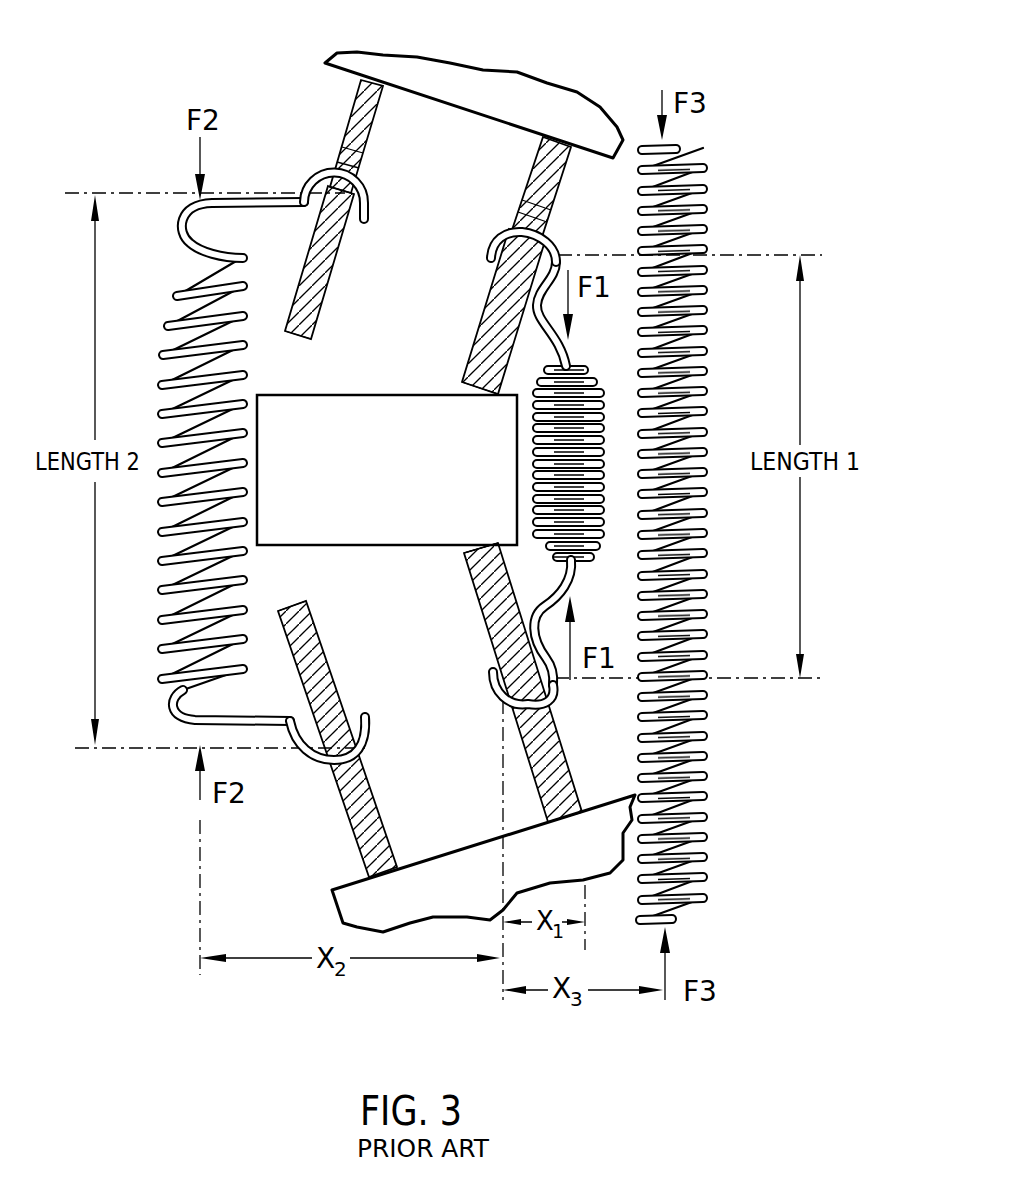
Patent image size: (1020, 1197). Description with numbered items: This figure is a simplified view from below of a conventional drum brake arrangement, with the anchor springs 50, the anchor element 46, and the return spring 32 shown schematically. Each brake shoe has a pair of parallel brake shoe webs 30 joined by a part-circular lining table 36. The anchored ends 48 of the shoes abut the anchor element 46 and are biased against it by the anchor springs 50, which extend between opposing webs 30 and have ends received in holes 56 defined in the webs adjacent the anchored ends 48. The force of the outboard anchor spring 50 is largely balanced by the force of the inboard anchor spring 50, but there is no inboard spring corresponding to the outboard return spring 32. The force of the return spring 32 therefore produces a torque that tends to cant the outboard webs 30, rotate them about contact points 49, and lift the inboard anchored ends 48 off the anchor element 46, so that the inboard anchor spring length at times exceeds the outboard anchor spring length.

The brake shoe web 30 is at (487, 297).
The return spring 32 is at (710, 220).
The lining table 36 is at (478, 107).
The anchor element 46 is at (402, 545).
The anchored end 48 is at (297, 345).
The contact point 49 is at (497, 543).
The anchor spring 50 is at (170, 384).
The hole 56 is at (492, 207).